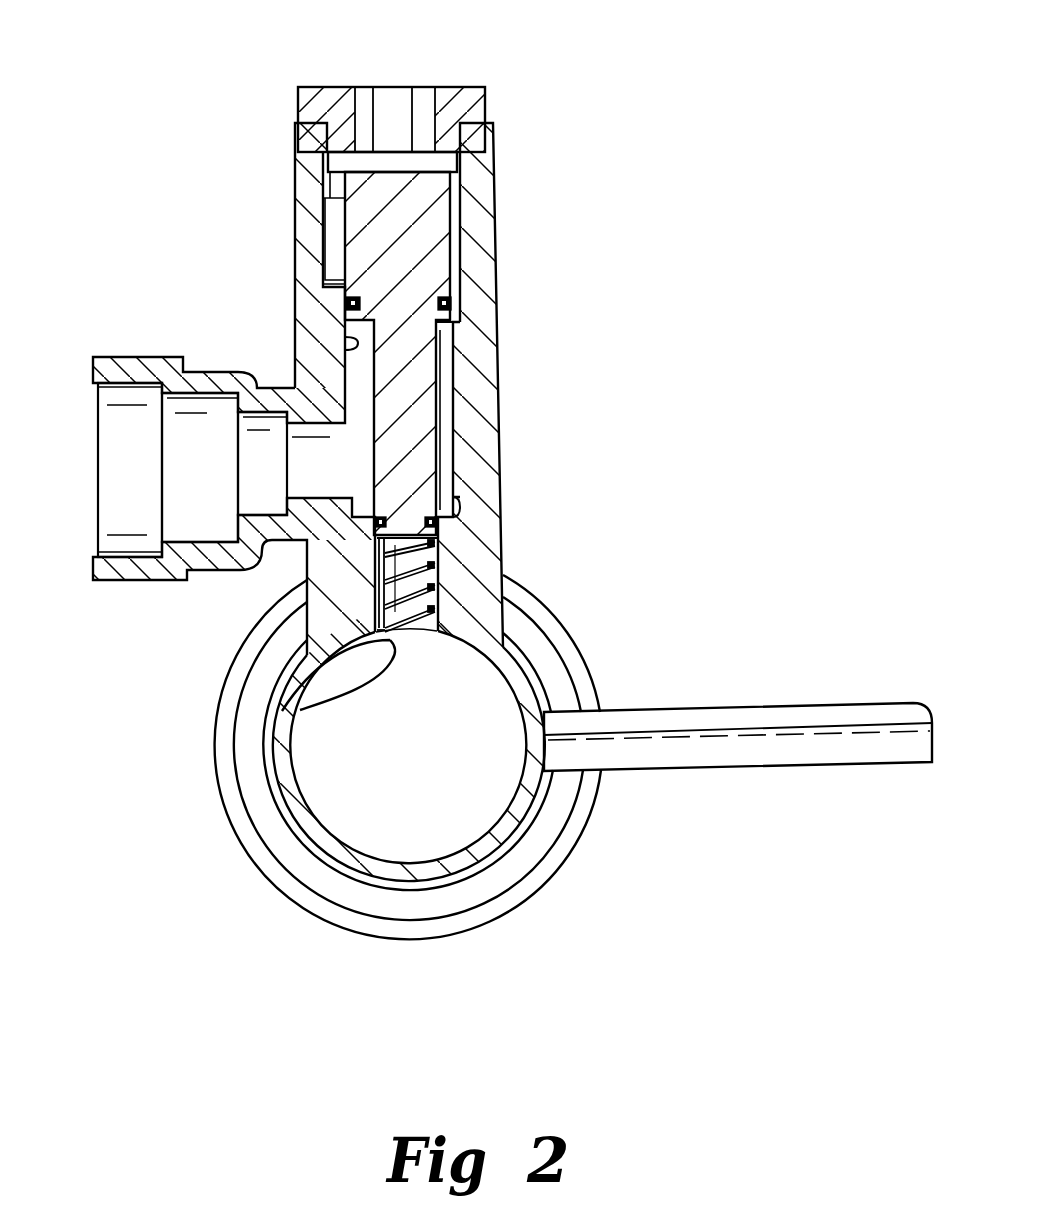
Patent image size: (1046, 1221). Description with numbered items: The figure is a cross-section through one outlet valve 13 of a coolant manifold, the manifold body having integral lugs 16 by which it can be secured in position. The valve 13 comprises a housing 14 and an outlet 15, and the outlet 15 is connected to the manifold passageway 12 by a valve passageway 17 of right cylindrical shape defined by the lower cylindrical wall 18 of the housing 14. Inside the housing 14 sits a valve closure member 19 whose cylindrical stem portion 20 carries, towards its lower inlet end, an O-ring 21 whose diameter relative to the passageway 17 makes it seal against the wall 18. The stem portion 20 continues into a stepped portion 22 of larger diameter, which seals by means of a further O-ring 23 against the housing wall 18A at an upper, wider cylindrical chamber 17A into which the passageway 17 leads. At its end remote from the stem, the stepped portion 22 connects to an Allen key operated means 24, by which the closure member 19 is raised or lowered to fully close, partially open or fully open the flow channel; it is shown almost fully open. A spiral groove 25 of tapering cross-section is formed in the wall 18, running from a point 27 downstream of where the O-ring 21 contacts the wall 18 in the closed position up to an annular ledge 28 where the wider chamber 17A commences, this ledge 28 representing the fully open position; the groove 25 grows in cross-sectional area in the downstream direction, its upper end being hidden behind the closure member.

The manifold passageway 12 is at (375, 822).
The outlet valve 13 is at (503, 290).
The housing 14 is at (503, 425).
The outlet 15 is at (148, 470).
The integral lug 16 is at (763, 752).
The valve passageway 17 is at (430, 613).
The upper wider cylindrical chamber 17A is at (445, 372).
The lower cylindrical wall 18 is at (283, 710).
The housing wall 18A is at (350, 348).
The valve closure member 19 is at (444, 325).
The cylindrical stem portion 20 is at (440, 458).
The O-ring 21 is at (458, 512).
The stepped portion 22 is at (418, 235).
The O-ring 23 is at (346, 300).
The Allen key operated means 24 is at (400, 105).
The spiral groove 25 is at (440, 604).
The point 27 is at (385, 603).
The annular ledge 28 is at (380, 515).